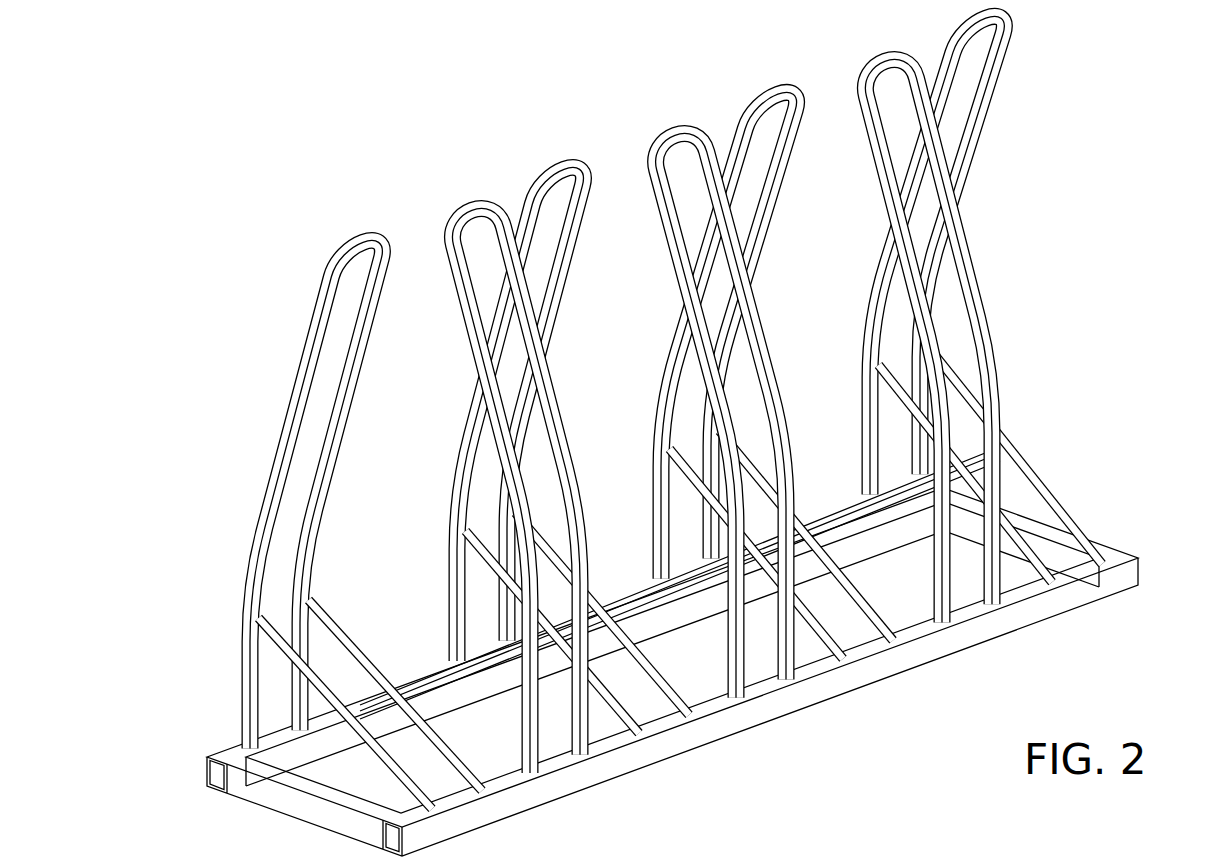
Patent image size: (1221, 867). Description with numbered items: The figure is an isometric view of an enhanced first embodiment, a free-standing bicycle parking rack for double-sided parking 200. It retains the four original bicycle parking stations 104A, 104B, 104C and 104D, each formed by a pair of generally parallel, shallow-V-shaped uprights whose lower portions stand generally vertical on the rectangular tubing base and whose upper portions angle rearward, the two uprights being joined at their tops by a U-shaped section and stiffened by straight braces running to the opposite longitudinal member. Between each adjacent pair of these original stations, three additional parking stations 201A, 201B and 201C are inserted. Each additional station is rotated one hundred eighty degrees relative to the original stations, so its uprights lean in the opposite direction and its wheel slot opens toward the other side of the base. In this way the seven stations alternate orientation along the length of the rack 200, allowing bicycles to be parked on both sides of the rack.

The free-standing bicycle parking rack for double-sided parking 200 is at (312, 142).
The bicycle parking station 104A is at (467, 814).
The bicycle parking station 104B is at (674, 739).
The bicycle parking station 104C is at (878, 663).
The bicycle parking station 104D is at (1084, 589).
The additional parking station 201A is at (564, 779).
The additional parking station 201B is at (771, 703).
The additional parking station 201C is at (978, 627).